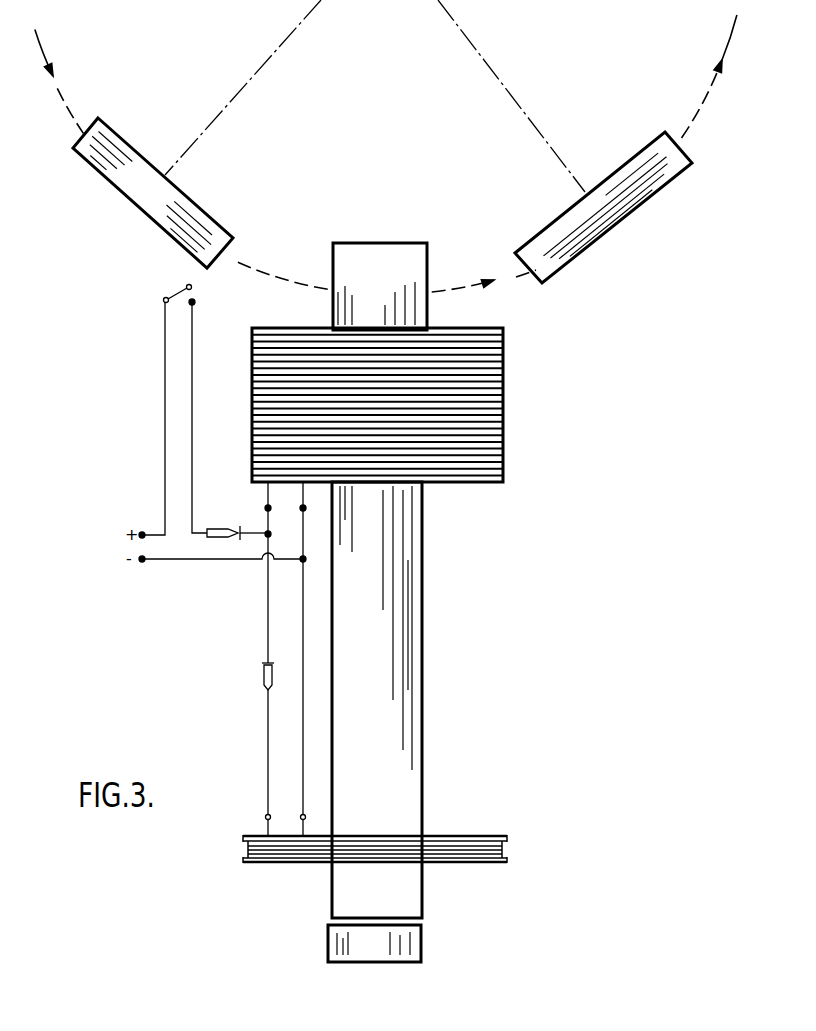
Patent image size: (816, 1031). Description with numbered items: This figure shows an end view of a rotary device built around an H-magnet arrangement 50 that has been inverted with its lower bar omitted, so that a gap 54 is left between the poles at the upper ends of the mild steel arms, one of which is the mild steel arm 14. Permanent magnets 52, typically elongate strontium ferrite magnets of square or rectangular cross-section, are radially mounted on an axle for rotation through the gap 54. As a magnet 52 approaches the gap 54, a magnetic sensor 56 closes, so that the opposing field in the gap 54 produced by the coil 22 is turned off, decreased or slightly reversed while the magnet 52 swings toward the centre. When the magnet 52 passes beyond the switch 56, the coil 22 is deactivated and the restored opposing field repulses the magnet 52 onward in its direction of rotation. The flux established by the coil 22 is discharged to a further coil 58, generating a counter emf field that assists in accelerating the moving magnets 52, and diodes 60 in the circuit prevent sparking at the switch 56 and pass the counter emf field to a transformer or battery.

The mild steel arm 14 is at (410, 553).
The coil 22 is at (490, 405).
The H-magnet arrangement 50 is at (438, 638).
The permanent magnet 52 is at (186, 209).
The gap 54 is at (401, 230).
The magnetic sensor 56 is at (202, 290).
The further coil 58 is at (470, 858).
The diode 60 is at (264, 686).